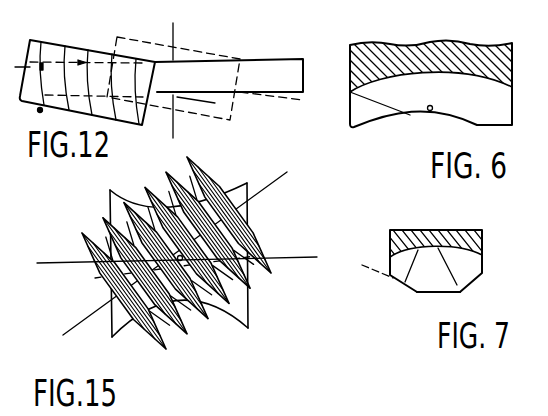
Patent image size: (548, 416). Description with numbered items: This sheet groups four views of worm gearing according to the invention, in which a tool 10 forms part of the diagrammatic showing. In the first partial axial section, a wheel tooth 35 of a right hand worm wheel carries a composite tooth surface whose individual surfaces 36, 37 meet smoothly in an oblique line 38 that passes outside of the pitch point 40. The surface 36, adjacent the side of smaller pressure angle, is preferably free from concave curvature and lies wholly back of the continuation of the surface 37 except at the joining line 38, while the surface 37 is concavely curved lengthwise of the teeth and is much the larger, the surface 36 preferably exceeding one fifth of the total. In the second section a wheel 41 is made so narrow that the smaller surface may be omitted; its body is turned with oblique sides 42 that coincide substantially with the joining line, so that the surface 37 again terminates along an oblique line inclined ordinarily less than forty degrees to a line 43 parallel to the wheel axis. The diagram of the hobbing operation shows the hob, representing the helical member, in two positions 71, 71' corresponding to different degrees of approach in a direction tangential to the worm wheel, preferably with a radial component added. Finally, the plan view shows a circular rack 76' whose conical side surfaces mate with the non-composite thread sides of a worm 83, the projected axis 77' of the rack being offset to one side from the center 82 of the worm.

In FIG. 12, the tool 10 is at (159, 69).
In FIG. 12, the hob position 71 is at (87, 67).
In FIG. 12, the hob position 71' is at (198, 63).
In FIG. 6, the wheel tooth 35 is at (397, 55).
In FIG. 6, the surface 36 is at (363, 115).
In FIG. 6, the surface 37 is at (448, 85).
In FIG. 7, the surface 37 is at (460, 260).
In FIG. 6, the oblique line 38 is at (388, 100).
In FIG. 7, the oblique line 38 is at (374, 271).
In FIG. 6, the pitch point 40 is at (428, 112).
In FIG. 7, the wheel 41 is at (407, 238).
In FIG. 7, the oblique sides 42 is at (427, 240).
In FIG. 7, the line parallel to the wheel axis 43 is at (428, 293).
In FIG. 15, the circular rack 76' is at (176, 248).
In FIG. 15, the projected axis 77' is at (187, 253).
In FIG. 15, the center 82 is at (196, 248).
In FIG. 15, the worm 83 is at (237, 310).